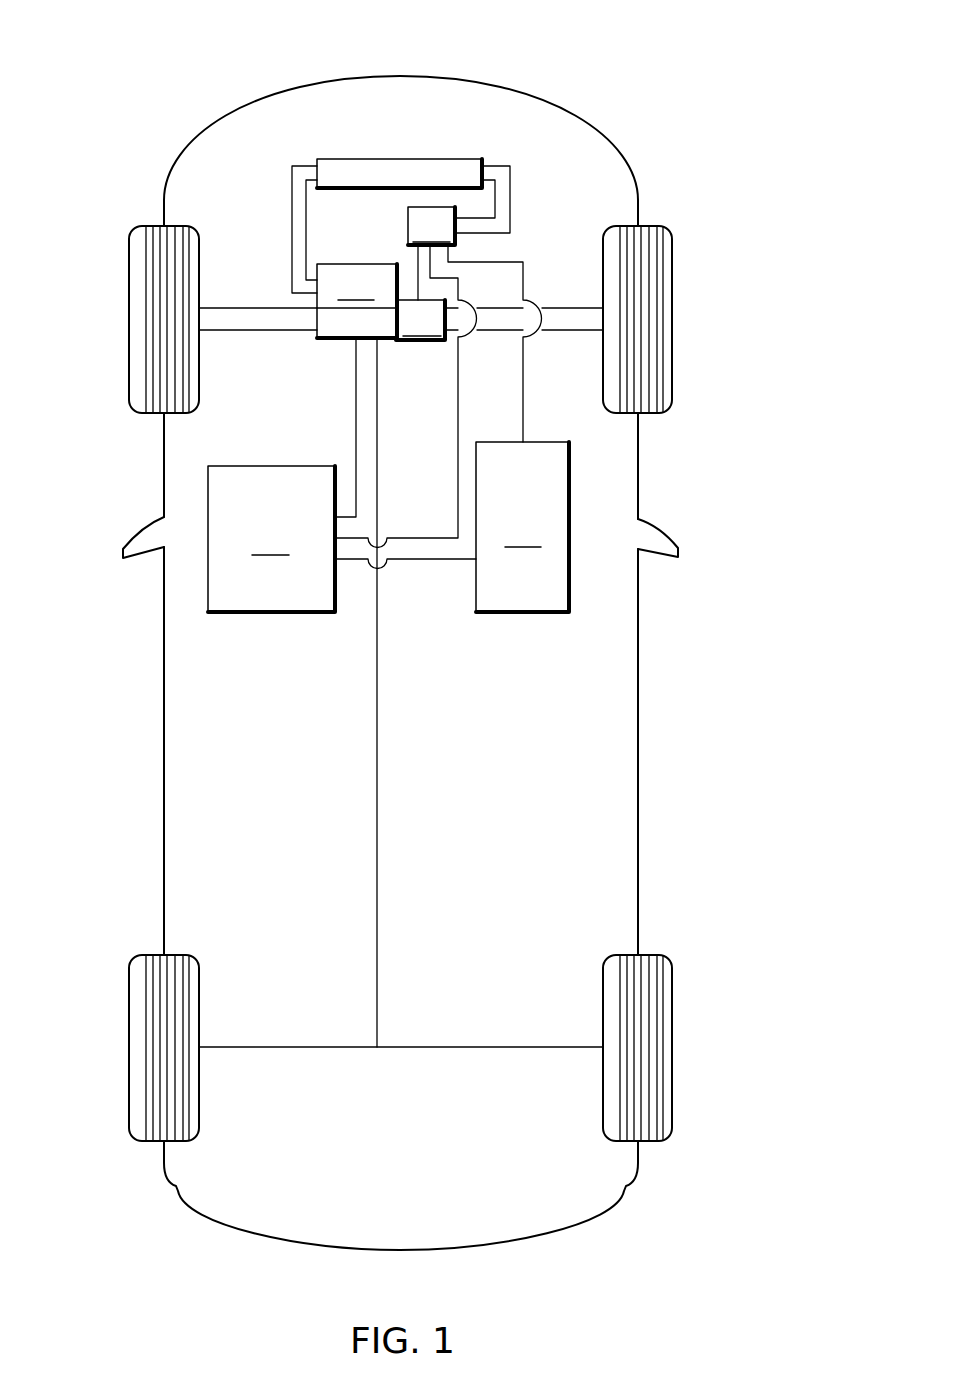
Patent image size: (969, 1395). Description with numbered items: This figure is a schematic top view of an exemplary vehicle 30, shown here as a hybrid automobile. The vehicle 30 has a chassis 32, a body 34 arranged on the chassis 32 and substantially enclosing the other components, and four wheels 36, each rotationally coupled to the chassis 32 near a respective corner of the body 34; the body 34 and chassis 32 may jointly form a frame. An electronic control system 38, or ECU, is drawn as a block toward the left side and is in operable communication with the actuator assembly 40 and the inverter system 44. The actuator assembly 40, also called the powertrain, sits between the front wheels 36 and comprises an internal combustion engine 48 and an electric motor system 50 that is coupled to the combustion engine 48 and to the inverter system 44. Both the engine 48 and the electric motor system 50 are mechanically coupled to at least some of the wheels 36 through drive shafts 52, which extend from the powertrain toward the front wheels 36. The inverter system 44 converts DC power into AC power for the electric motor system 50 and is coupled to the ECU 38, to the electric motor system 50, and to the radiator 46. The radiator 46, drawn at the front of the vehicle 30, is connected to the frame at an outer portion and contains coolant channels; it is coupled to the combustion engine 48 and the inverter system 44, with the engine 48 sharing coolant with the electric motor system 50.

The vehicle 30 is at (642, 105).
The chassis 32 is at (377, 703).
The body 34 is at (164, 703).
The wheels 36 is at (129, 315).
The electronic control system 38 is at (342, 539).
The actuator assembly 40 is at (381, 390).
The inverter system 44 is at (438, 377).
The radiator 46 is at (370, 158).
The internal combustion engine 48 is at (357, 390).
The electric motor system 50 is at (392, 352).
The drive shafts 52 is at (238, 308).